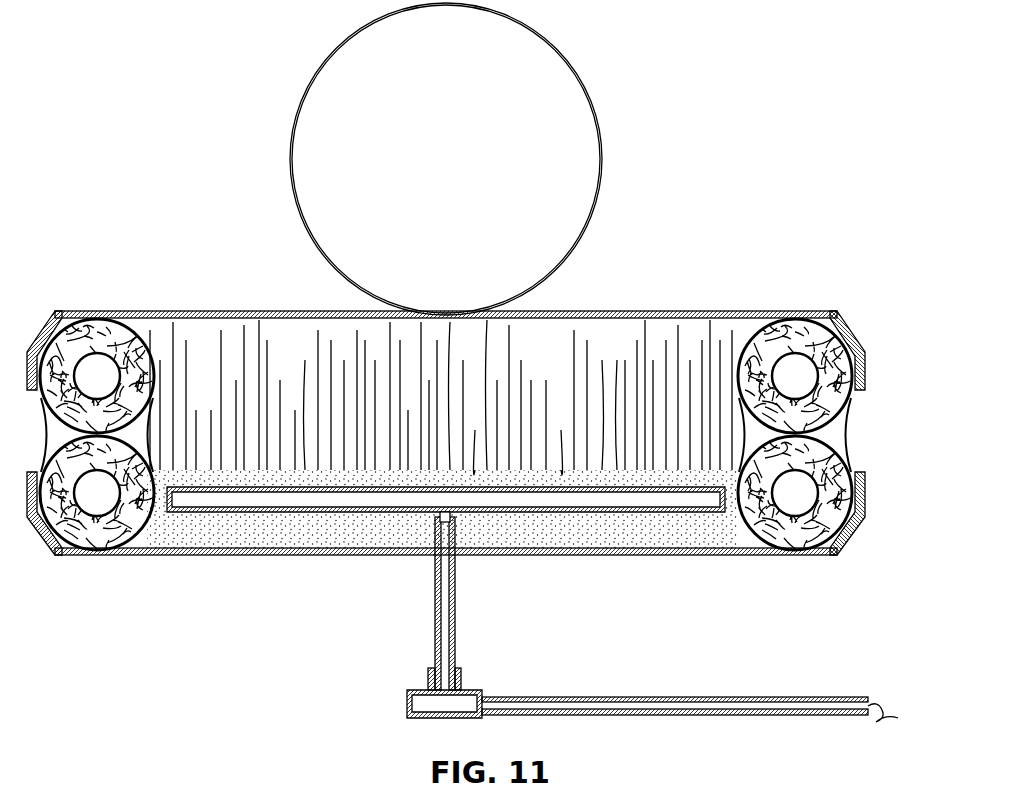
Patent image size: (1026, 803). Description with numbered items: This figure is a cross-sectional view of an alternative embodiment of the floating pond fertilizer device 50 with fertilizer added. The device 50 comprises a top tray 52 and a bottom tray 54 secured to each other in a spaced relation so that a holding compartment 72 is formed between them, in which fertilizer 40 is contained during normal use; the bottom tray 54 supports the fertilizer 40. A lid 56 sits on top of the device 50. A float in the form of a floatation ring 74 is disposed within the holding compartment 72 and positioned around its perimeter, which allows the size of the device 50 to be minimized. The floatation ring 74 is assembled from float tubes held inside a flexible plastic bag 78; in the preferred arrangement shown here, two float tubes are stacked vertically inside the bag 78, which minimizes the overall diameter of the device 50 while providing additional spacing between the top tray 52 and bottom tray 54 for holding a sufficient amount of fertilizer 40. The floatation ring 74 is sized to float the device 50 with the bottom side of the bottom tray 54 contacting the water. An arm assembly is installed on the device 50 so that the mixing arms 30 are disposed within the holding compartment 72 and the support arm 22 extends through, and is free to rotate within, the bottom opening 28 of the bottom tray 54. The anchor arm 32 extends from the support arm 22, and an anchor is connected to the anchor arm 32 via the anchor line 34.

The floating pond fertilizer device 50 is at (113, 119).
The lid 56 is at (575, 106).
The top tray 52 is at (110, 312).
The bottom tray 54 is at (105, 553).
The flexible plastic bag 78 is at (847, 432).
The floatation ring 74 is at (112, 340).
The holding compartment 72 is at (589, 394).
The fertilizer 40 is at (688, 530).
The mixing arms 30 is at (250, 502).
The support arm 22 is at (435, 615).
The bottom opening 28 is at (457, 556).
The anchor arm 32 is at (698, 715).
The anchor line 34 is at (880, 705).